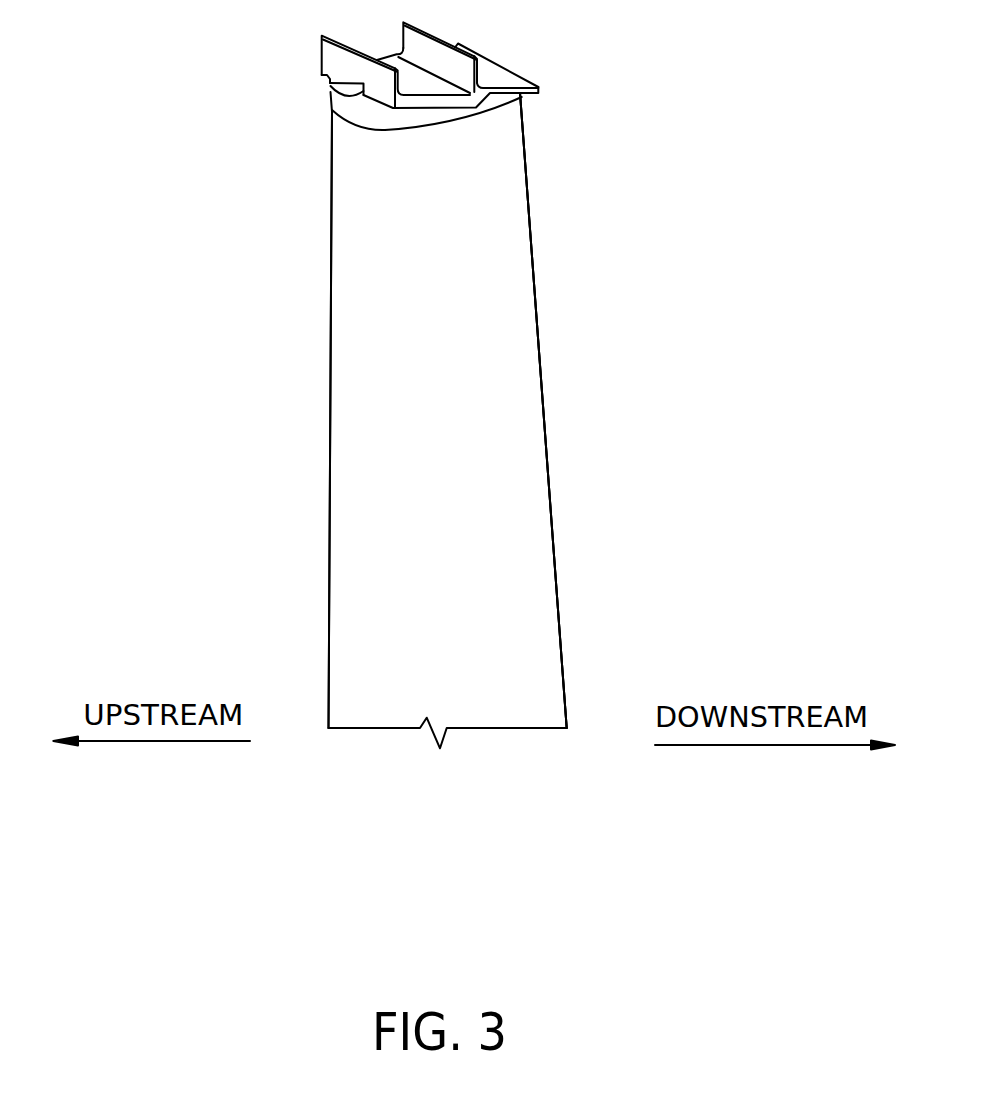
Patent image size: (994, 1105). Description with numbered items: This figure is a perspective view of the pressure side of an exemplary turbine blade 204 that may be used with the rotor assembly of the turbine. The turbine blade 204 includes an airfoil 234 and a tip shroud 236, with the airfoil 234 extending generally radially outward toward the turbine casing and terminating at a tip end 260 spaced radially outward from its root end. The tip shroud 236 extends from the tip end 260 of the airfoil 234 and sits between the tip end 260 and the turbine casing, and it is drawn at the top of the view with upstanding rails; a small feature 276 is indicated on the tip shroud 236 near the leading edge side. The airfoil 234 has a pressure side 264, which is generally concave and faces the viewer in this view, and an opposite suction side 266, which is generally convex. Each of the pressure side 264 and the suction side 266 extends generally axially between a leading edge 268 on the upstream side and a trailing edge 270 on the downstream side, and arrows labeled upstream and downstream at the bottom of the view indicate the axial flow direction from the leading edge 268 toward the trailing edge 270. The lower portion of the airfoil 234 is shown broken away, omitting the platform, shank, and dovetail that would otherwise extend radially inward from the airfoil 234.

The turbine blade 204 is at (565, 420).
The airfoil 234 is at (380, 530).
The tip shroud 236 is at (404, 70).
The tip end 260 is at (372, 168).
The pressure side 264 is at (425, 650).
The suction side 266 is at (560, 637).
The leading edge 268 is at (330, 427).
The trailing edge 270 is at (558, 589).
The seal boss 276 is at (367, 118).